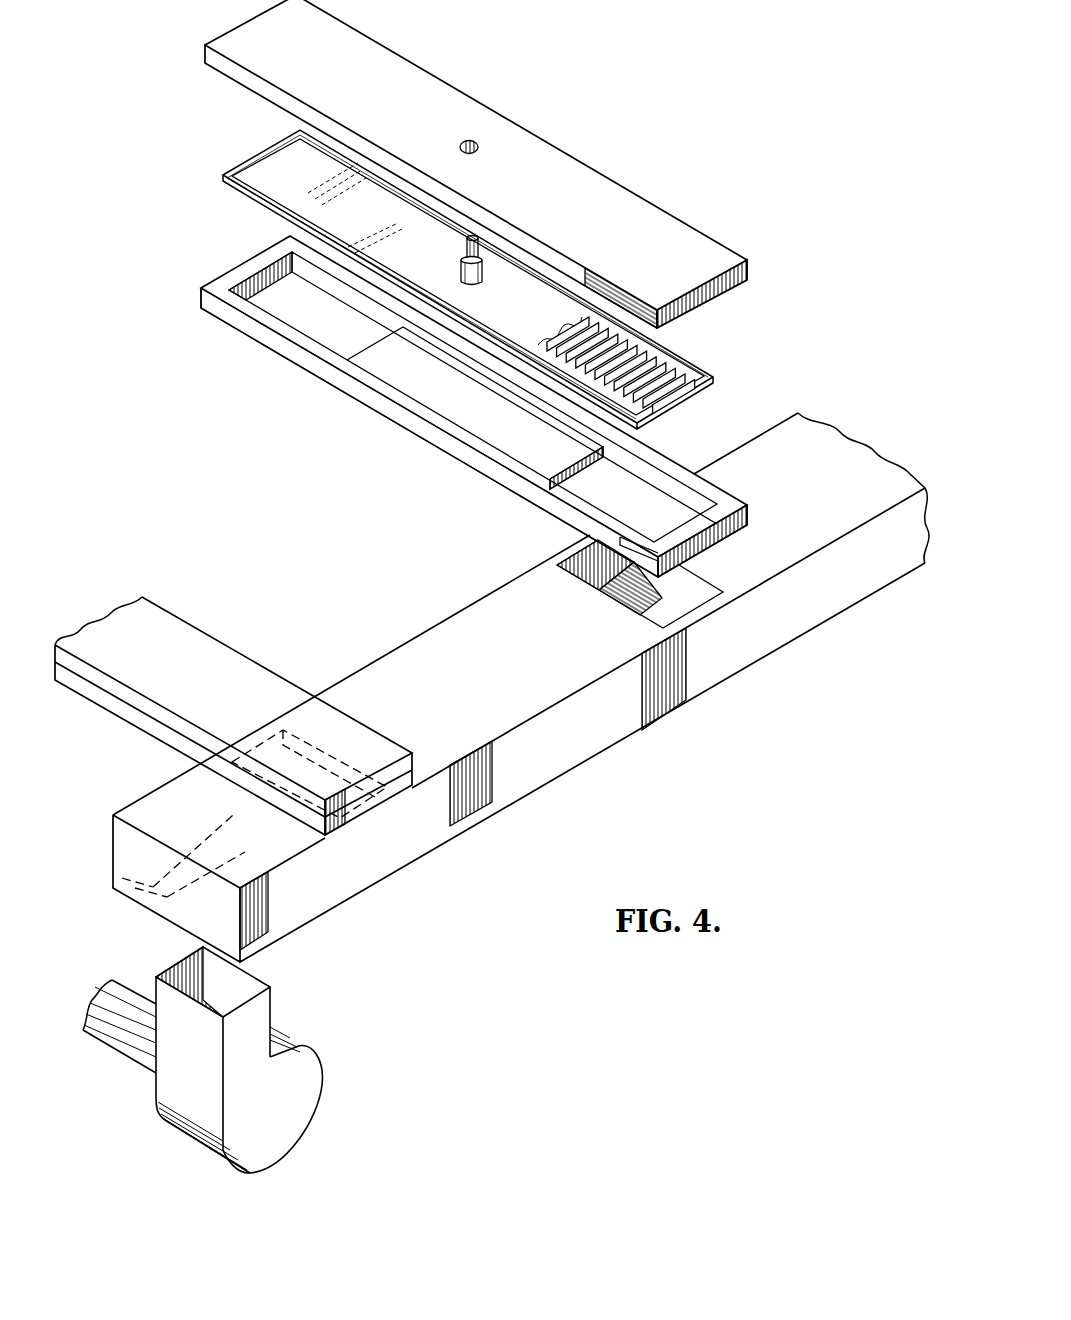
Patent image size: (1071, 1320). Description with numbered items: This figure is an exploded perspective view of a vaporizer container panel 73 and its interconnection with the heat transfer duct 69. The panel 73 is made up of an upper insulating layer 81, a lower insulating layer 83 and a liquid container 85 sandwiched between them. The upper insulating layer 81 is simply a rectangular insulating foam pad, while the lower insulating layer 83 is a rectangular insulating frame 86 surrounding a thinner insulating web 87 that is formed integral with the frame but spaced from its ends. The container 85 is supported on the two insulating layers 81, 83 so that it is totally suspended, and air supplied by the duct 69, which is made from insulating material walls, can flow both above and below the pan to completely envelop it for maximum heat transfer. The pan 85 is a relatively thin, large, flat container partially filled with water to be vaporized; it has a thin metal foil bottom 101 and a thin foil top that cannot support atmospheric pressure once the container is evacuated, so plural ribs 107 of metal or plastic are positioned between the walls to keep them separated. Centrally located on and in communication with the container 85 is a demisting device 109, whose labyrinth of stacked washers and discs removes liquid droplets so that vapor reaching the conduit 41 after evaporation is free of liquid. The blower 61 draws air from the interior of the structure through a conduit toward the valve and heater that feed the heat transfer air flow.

The conduit 41 is at (465, 247).
The blower 61 is at (310, 1097).
The duct 69 is at (470, 655).
The panel 73 is at (182, 2).
The upper insulating layer 81 is at (527, 147).
The lower insulating layer 83 is at (284, 364).
The liquid container 85 is at (675, 414).
The insulating frame 86 is at (527, 491).
The insulating web 87 is at (447, 404).
The metal foil bottom 101 is at (668, 392).
The ribs 107 is at (662, 370).
The demisting device 109 is at (461, 270).